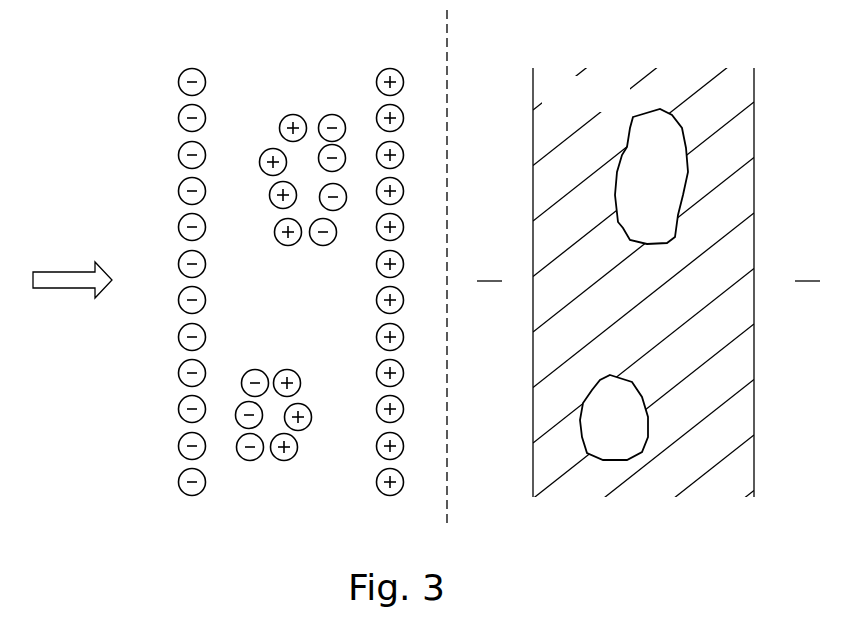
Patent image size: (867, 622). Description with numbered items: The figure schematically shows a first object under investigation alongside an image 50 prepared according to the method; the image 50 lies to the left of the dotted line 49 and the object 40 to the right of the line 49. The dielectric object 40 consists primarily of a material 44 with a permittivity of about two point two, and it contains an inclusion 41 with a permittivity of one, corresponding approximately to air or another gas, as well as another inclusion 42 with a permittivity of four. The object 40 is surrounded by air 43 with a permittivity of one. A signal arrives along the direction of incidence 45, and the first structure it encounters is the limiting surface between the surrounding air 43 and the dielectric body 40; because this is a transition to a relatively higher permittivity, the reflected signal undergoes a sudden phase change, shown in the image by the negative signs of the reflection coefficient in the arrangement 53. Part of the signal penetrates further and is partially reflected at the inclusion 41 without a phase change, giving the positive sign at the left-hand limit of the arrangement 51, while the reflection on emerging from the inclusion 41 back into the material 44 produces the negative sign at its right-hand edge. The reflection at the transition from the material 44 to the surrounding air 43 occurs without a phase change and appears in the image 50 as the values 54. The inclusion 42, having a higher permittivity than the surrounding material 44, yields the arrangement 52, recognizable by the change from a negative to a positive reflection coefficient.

The object under investigation 40 is at (668, 311).
The inclusion 41 is at (688, 166).
The inclusion 42 is at (648, 420).
The air 43 is at (652, 180).
The material 44 is at (600, 155).
The direction of incidence 45 is at (68, 270).
The dotted line 49 is at (450, 35).
The image 50 is at (259, 274).
The arrangement of positive and negative reflection coefficients 51 is at (293, 152).
The arrangement 52 is at (280, 403).
The arrangement 53 is at (182, 453).
The values 54 is at (385, 492).